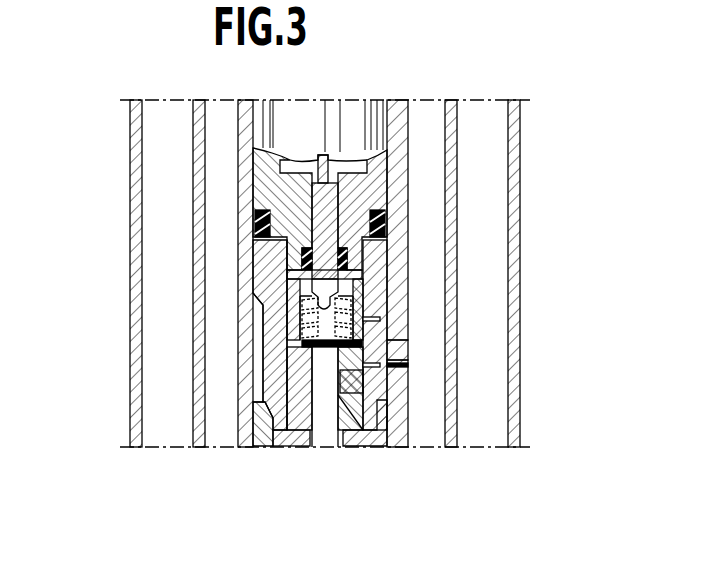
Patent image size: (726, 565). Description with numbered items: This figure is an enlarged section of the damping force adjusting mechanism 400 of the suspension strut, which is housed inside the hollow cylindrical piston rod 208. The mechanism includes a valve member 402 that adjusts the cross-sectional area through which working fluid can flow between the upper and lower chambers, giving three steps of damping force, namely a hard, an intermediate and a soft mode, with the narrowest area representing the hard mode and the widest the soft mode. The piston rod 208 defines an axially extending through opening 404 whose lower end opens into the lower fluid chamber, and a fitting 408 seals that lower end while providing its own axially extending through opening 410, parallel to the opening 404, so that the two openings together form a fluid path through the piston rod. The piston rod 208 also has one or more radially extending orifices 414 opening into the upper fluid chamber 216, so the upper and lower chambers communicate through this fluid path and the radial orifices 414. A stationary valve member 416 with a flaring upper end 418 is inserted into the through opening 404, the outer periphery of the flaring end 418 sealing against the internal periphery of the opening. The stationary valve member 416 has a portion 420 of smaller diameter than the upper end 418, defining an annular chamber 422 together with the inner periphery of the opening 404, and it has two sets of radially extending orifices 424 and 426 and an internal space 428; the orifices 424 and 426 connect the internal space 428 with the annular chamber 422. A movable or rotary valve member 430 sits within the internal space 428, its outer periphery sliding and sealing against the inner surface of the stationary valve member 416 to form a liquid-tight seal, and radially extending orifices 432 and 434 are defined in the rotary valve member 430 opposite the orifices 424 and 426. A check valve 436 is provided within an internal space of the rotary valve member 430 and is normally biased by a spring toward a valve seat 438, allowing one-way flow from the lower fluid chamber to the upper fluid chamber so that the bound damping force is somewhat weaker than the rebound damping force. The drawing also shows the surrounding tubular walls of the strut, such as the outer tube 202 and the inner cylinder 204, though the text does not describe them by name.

The outer casing 202 is at (520, 202).
The tubing string 204 is at (457, 292).
The piston rod 208 is at (398, 112).
The upper fluid chamber 216 is at (438, 338).
The damping force adjusting mechanism 400 is at (408, 232).
The valve member 402 is at (408, 353).
The through opening 404 is at (263, 423).
The fitting 408 is at (270, 448).
The through opening 410 is at (330, 440).
The radially extending orifices 414 is at (395, 376).
The stationary valve member 416 is at (260, 325).
The flaring upper end 418 is at (267, 260).
The smaller diameter portion 420 is at (270, 345).
The annular chamber 422 is at (258, 373).
The radially extending orifices 424 is at (378, 325).
The radially extending orifices 426 is at (412, 407).
The internal space 428 is at (370, 262).
The rotary valve member 430 is at (298, 383).
The radially extending orifices 432 is at (362, 302).
The radially extending orifices 434 is at (352, 392).
The check valve 436 is at (322, 372).
The valve seat 438 is at (257, 374).